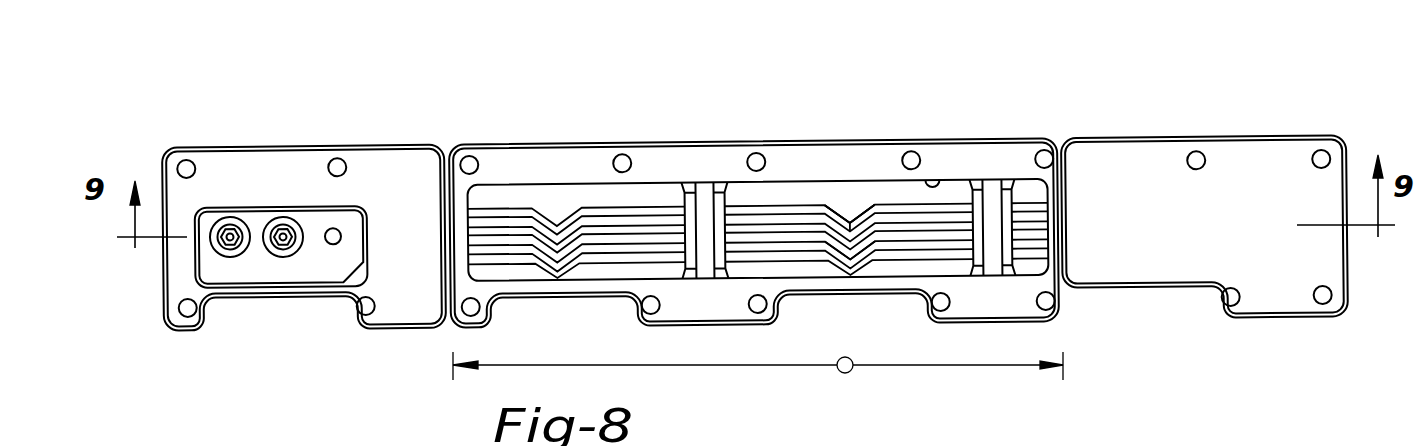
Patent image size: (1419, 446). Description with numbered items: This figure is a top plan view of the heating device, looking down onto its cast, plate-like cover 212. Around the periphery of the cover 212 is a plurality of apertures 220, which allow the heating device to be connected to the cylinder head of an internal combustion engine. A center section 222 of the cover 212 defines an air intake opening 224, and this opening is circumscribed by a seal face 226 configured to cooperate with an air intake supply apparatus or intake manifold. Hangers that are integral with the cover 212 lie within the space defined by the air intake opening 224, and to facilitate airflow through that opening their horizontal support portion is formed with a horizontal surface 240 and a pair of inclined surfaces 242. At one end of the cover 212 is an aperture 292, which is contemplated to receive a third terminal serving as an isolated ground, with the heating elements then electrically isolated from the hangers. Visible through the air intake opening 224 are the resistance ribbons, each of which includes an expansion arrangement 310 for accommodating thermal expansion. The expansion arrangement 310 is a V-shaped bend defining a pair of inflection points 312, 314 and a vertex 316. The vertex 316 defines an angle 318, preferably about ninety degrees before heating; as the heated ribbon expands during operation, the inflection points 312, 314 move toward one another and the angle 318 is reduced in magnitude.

The cover 212 is at (1160, 220).
The apertures 220 is at (628, 161).
The center section 222 is at (845, 373).
The air intake opening 224 is at (942, 183).
The seal face 226 is at (860, 175).
The horizontal surface 240 is at (707, 202).
The inclined surfaces 242 is at (680, 200).
The aperture 292 is at (341, 237).
The expansion arrangement 310 is at (870, 185).
The inflection point 312 is at (880, 198).
The inflection point 314 is at (832, 205).
The vertex 316 is at (830, 244).
The angle 318 is at (862, 190).